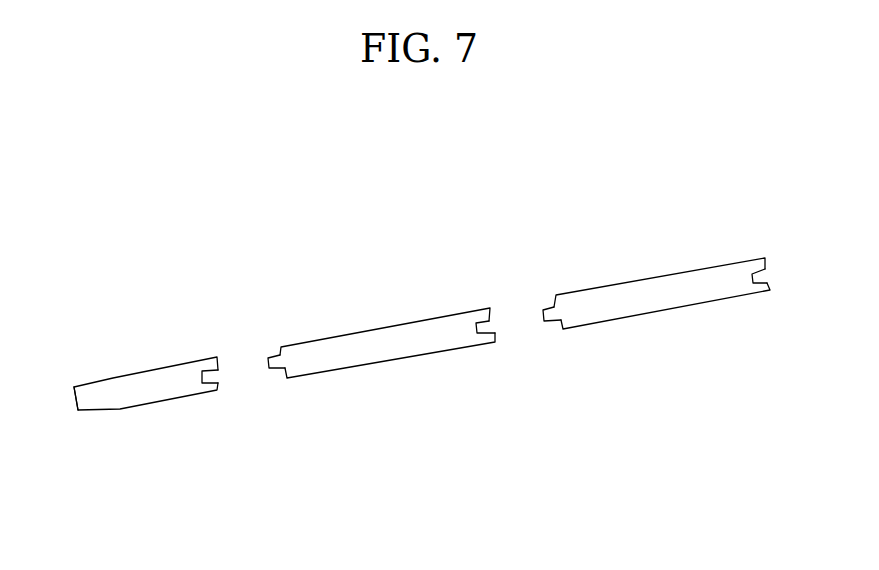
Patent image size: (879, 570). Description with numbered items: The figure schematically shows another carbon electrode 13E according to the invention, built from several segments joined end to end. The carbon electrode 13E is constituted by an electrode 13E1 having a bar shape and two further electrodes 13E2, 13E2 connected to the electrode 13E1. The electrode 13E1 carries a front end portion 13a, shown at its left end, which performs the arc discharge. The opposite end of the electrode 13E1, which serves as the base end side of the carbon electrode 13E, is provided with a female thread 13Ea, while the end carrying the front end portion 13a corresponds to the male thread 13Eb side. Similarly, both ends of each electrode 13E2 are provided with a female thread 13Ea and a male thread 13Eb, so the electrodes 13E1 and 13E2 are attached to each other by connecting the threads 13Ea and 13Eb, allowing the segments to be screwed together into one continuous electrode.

The carbon electrode 13E is at (424, 340).
The electrode 13E1 is at (152, 403).
The electrode 13E2 is at (388, 365).
The female thread 13Ea is at (216, 372).
The male thread 13Eb is at (269, 358).
The front end portion 13a is at (76, 404).